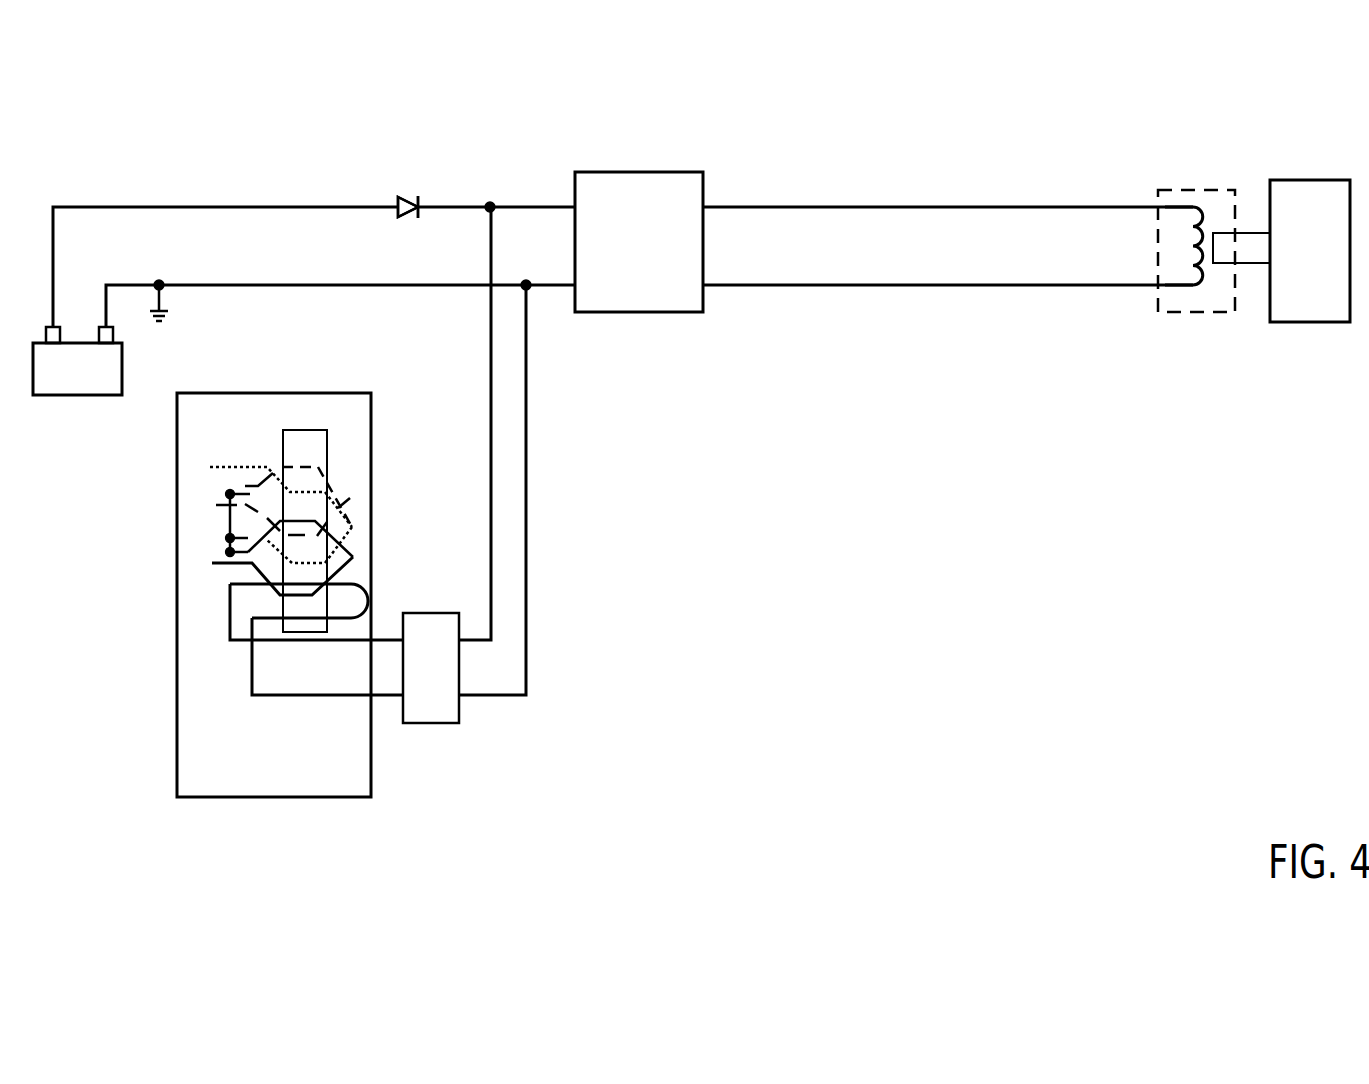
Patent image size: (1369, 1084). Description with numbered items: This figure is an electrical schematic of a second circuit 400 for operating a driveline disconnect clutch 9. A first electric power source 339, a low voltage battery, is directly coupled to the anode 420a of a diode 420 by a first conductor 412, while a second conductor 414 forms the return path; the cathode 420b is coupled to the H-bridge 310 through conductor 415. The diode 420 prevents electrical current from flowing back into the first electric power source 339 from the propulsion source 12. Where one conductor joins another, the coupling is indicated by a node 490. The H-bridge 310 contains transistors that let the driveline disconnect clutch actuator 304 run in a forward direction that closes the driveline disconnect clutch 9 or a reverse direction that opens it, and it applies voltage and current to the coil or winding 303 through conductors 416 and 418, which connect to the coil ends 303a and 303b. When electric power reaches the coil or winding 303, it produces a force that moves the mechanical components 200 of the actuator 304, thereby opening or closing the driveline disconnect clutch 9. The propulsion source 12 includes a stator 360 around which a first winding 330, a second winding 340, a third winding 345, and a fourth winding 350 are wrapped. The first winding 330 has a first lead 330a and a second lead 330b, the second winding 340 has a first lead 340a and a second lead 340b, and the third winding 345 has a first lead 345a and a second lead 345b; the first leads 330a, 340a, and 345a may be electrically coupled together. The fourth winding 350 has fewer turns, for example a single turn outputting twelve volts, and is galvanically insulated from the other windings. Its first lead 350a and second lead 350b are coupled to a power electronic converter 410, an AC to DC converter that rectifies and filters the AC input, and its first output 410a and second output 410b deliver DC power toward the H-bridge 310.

The driveline disconnect clutch 9 is at (1310, 251).
The propulsion source 12 is at (274, 595).
The mechanical components 200 is at (1241, 248).
The coil or winding 303 is at (1201, 199).
The coil first end 303a is at (1153, 208).
The coil second end 303b is at (1137, 289).
The driveline disconnect clutch actuator 304 is at (1158, 312).
The H-bridge 310 is at (639, 242).
The first winding 330 is at (340, 483).
The first lead of first winding 330a is at (217, 465).
The second lead of first winding 330b is at (245, 540).
The first electric power source 339 is at (77, 361).
The second winding 340 is at (353, 527).
The first lead of second winding 340a is at (250, 486).
The second lead of second winding 340b is at (225, 505).
The third winding 345 is at (352, 553).
The first lead of third winding 345a is at (228, 539).
The second lead of third winding 345b is at (214, 565).
The fourth winding 350 is at (370, 587).
The first lead of fourth winding 350a is at (230, 596).
The second lead of fourth winding 350b is at (230, 618).
The stator 360 is at (307, 430).
The second circuit 400 is at (1222, 144).
The power electronic converter 410 is at (431, 668).
The first output of power electronic converter 410a is at (459, 640).
The second output of power electronic converter 410b is at (459, 695).
The first conductor 412 is at (142, 205).
The second conductor 414 is at (227, 287).
The conductor 415 is at (530, 203).
The conductor 416 is at (855, 206).
The conductor 418 is at (855, 284).
The diode 420 is at (410, 215).
The anode 420a is at (398, 206).
The cathode 420b is at (418, 206).
The node 490 is at (527, 288).